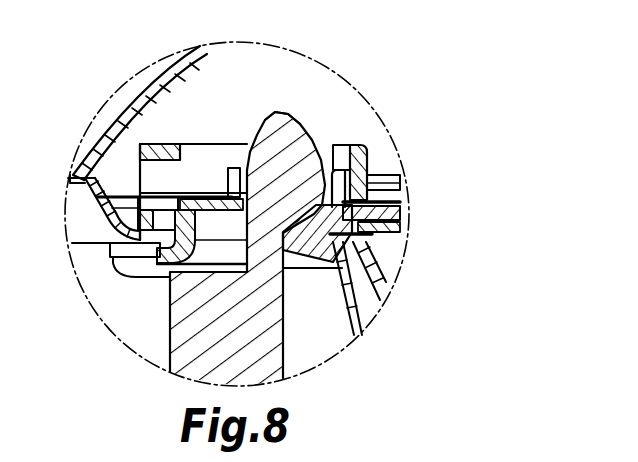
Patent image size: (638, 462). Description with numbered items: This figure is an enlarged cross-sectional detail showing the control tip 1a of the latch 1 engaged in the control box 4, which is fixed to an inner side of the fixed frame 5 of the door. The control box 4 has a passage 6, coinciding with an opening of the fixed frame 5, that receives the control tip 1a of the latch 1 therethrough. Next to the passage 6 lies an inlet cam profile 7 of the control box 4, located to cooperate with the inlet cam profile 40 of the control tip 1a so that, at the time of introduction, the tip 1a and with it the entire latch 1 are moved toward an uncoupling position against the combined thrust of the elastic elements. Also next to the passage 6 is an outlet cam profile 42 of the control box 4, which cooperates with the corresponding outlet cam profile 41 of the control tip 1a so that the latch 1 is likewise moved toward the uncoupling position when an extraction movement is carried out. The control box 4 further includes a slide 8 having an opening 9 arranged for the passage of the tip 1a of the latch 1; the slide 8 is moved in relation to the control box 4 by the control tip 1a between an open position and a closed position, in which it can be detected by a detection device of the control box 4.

The latch 1 is at (160, 313).
The control tip 1a is at (262, 135).
The control box 4 is at (382, 246).
The fixed frame 5 is at (117, 117).
The passage 6 is at (194, 154).
The inlet cam profile 7 is at (302, 268).
The slide 8 is at (396, 180).
The opening 9 is at (248, 175).
The inlet cam profile 40 is at (292, 118).
The outlet cam profile 41 is at (283, 232).
The outlet cam profile 42 is at (300, 190).